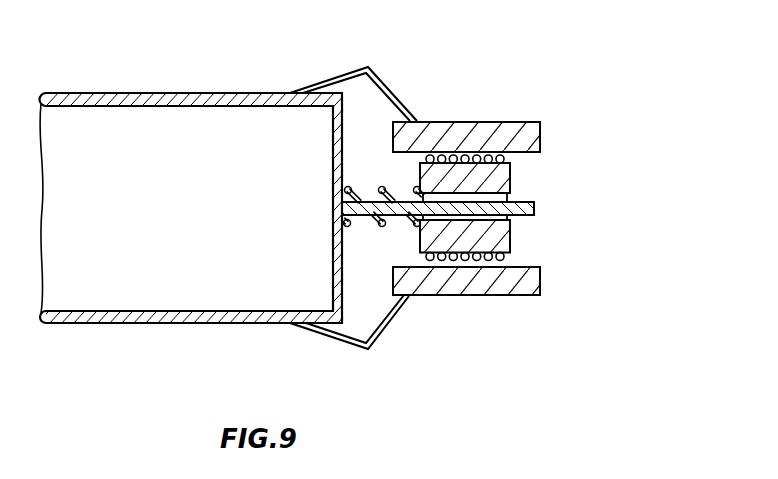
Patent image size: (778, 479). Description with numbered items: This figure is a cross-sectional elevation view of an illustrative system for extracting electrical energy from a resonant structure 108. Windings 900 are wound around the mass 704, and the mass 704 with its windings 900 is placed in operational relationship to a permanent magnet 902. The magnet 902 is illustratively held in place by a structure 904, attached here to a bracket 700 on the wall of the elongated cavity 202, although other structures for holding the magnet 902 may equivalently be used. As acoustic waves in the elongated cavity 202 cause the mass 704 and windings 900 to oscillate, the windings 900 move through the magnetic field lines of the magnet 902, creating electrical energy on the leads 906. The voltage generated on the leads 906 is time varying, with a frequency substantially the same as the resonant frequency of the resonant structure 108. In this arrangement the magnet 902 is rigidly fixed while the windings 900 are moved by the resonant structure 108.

The elongated cavity 202 is at (130, 204).
The mounting bracket 700 is at (380, 81).
The structure 904 is at (343, 130).
The permanent magnet 902 is at (540, 134).
The mass 704 is at (449, 172).
The leads 906 is at (507, 158).
The windings 900 is at (477, 156).
The resonant structure 108 is at (363, 259).